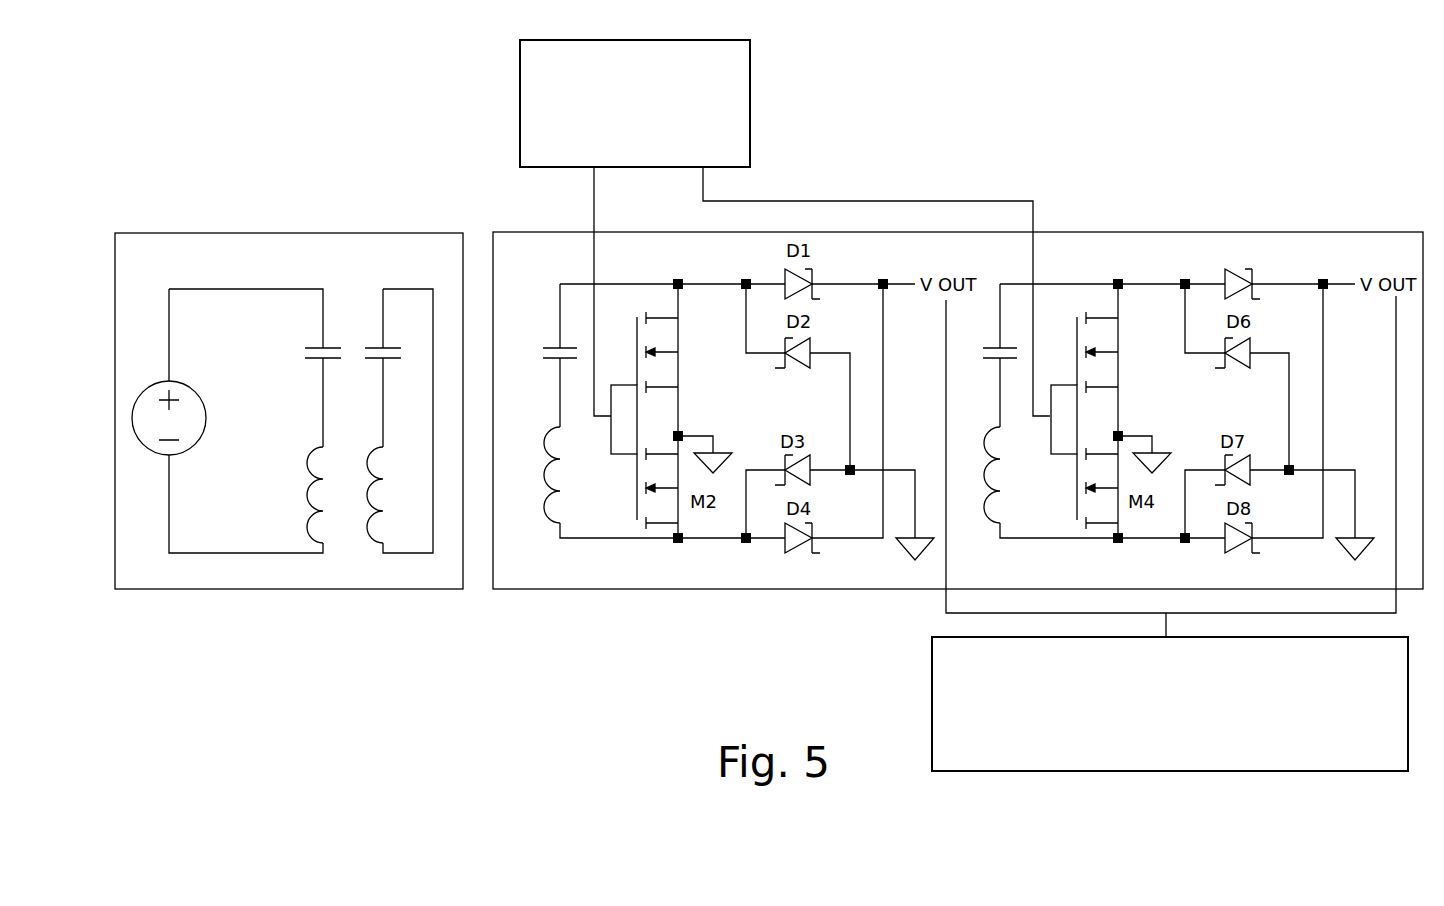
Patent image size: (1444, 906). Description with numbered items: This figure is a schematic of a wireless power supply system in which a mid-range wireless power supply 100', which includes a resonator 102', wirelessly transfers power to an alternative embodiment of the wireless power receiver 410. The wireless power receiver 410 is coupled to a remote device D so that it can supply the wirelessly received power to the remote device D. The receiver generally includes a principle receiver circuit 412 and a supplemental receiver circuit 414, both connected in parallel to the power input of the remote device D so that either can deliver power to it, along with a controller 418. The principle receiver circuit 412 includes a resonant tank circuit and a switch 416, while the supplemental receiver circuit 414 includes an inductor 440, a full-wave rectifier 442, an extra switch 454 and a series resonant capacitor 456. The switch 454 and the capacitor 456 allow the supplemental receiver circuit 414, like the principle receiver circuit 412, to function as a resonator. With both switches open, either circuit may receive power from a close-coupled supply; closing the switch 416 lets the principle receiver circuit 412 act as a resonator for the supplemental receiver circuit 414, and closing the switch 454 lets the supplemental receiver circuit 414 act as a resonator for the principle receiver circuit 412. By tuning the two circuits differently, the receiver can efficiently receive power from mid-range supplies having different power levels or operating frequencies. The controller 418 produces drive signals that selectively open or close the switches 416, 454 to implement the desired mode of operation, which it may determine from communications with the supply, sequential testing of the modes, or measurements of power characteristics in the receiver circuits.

The mid-range wireless power supply 100' is at (289, 361).
The resonator 102' is at (375, 486).
The wireless power receiver 410 is at (927, 124).
The principle receiver circuit 412 is at (575, 560).
The supplemental receiver circuit 414 is at (980, 548).
The switch 416 is at (621, 351).
The controller 418 is at (520, 96).
The inductor 440 is at (985, 474).
The full-wave rectifier 442 is at (1270, 260).
The switch 454 is at (1061, 350).
The series resonant capacitor 456 is at (983, 351).
The remote device D is at (932, 704).